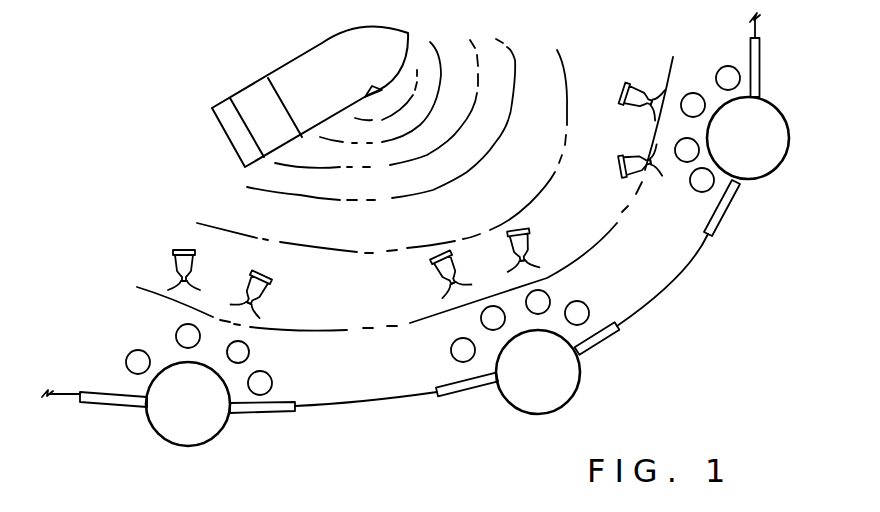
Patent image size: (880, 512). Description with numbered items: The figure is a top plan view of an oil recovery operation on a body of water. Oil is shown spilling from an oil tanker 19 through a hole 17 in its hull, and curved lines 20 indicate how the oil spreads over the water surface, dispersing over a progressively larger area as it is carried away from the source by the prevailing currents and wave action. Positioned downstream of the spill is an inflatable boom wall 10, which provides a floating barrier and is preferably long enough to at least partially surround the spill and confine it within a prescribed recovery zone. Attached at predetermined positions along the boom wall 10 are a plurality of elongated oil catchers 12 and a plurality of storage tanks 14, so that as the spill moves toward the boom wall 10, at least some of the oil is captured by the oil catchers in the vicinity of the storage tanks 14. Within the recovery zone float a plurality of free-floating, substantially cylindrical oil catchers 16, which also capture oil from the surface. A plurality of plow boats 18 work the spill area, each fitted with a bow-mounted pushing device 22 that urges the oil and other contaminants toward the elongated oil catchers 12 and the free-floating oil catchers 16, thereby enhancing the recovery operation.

The inflatable boom wall 10 is at (67, 393).
The elongated oil catchers 12 is at (114, 403).
The storage tanks 14 is at (201, 435).
The free-floating oil catchers 16 is at (186, 336).
The hole 17 is at (373, 92).
The plow boats 18 is at (189, 263).
The oil tanker 19 is at (300, 77).
The curved lines 20 is at (557, 52).
The bow-mounted pushing device 22 is at (170, 289).